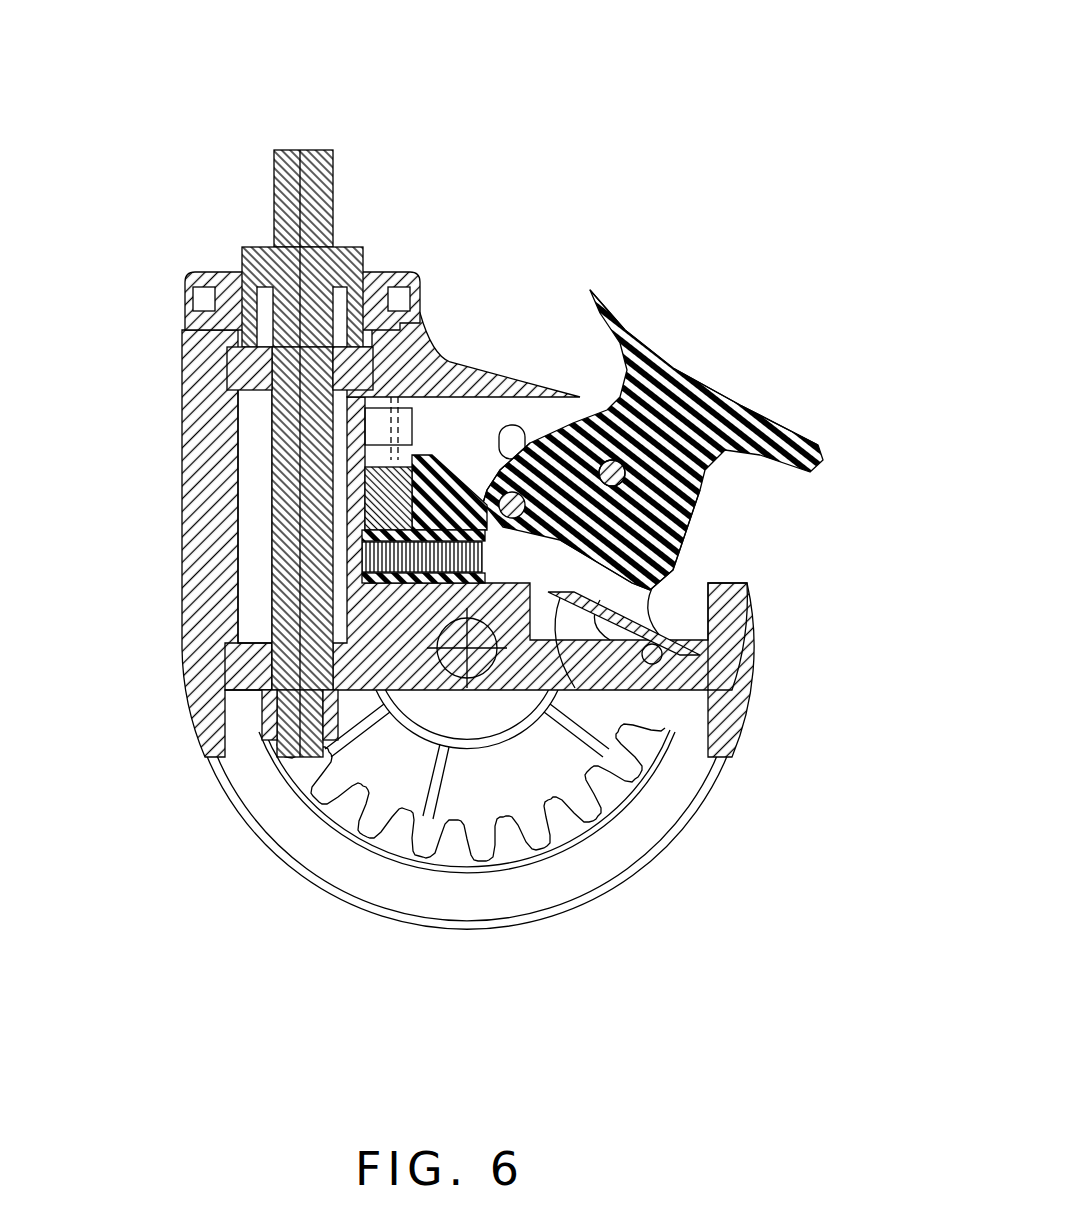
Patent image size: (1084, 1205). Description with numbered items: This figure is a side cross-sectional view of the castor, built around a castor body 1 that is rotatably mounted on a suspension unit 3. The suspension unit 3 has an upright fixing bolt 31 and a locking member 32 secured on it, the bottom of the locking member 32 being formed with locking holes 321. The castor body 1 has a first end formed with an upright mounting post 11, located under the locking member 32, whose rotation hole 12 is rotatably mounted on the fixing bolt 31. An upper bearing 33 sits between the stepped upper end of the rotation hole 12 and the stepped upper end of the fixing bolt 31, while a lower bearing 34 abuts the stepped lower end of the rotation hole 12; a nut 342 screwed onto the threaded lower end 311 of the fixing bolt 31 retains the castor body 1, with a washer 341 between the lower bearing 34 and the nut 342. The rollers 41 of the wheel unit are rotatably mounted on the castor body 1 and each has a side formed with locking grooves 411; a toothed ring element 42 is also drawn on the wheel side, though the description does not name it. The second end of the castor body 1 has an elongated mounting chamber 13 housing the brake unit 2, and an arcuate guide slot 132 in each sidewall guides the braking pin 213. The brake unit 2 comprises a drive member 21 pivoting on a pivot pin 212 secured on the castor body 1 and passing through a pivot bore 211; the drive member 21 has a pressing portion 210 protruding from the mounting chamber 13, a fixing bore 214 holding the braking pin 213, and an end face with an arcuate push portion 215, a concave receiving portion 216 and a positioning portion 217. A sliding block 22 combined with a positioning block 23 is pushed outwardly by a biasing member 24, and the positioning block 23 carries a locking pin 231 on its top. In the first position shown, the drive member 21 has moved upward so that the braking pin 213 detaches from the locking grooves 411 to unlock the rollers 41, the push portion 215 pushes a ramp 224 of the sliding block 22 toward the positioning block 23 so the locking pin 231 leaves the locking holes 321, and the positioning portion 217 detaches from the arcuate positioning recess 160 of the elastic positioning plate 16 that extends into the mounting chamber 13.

The castor body 1 is at (475, 566).
The mounting post 11 is at (215, 410).
The rotation hole 12 is at (258, 628).
The mounting chamber 13 is at (705, 550).
The arcuate guide slot 132 is at (512, 430).
The elastic positioning plate 16 is at (650, 760).
The arcuate positioning recess 160 is at (650, 640).
The brake unit 2 is at (500, 375).
The drive member 21 is at (701, 397).
The pressing portion 210 is at (615, 300).
The pivot bore 211 is at (506, 473).
The pivot pin 212 is at (690, 495).
The braking pin 213 is at (608, 462).
The fixing bore 214 is at (612, 473).
The arcuate push portion 215 is at (500, 492).
The concave receiving portion 216 is at (545, 720).
The positioning portion 217 is at (760, 608).
The sliding block 22 is at (345, 548).
The ramp 224 is at (440, 452).
The positioning block 23 is at (360, 505).
The locking pin 231 is at (370, 470).
The biasing member 24 is at (330, 578).
The suspension unit 3 is at (251, 424).
The fixing bolt 31 is at (330, 178).
The threaded lower end 311 is at (300, 757).
The locking member 32 is at (251, 292).
The locking holes 321 is at (200, 305).
The upper bearing 33 is at (255, 360).
The lower bearing 34 is at (245, 668).
The washer 341 is at (275, 705).
The nut 342 is at (270, 745).
The rollers 41 is at (445, 900).
The locking grooves 411 is at (515, 850).
The ring gear 42 is at (395, 868).